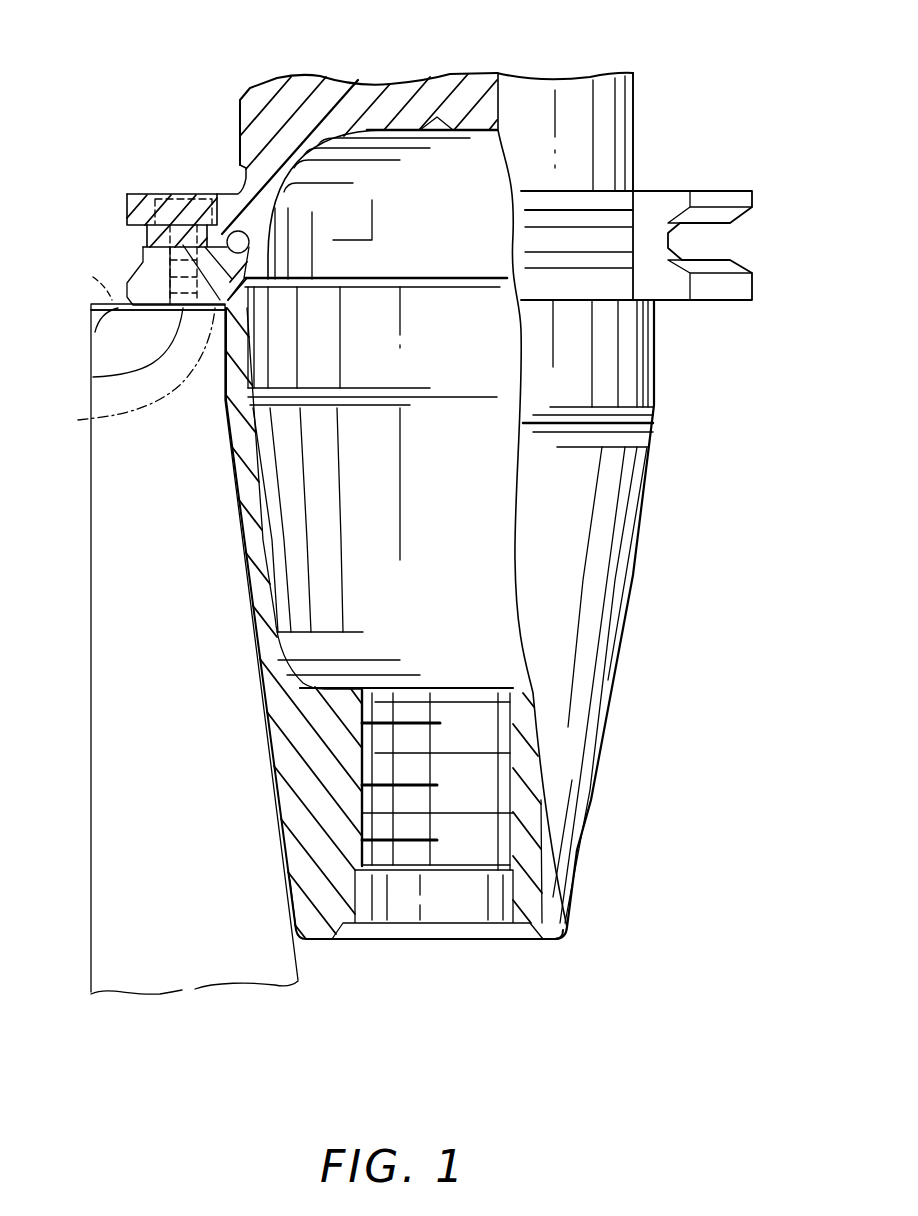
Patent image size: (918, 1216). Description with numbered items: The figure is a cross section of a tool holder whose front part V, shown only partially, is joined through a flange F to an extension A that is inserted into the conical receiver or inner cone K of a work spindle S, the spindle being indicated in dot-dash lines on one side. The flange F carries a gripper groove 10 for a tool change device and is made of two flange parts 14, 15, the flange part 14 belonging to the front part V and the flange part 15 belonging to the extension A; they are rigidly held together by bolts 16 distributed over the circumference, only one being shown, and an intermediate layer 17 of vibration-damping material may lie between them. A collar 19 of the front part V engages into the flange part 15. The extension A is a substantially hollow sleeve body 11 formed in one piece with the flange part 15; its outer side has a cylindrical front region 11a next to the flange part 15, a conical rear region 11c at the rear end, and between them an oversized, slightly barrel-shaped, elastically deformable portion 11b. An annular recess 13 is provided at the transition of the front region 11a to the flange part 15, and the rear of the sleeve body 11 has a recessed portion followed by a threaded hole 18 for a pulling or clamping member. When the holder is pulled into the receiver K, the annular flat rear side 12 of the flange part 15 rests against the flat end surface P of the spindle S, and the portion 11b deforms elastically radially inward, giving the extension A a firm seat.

The front part V is at (545, 104).
The flange F is at (742, 152).
The gripper groove 10 is at (750, 234).
The annular flat rear side 12 is at (748, 318).
The work spindle S is at (124, 557).
The annular recess 13 is at (93, 377).
The inner cone K is at (133, 372).
The flat end surface P is at (87, 281).
The flange part 14 is at (130, 194).
The flange part 15 is at (140, 270).
The bolt 16 is at (187, 194).
The intermediate layer 17 is at (152, 231).
The sleeve body 11 is at (230, 500).
The front region 11a is at (392, 345).
The elastically deformable portion 11b is at (398, 485).
The rear region 11c is at (262, 863).
The threaded hole 18 is at (463, 850).
The collar 19 is at (352, 221).
The extension A is at (613, 760).